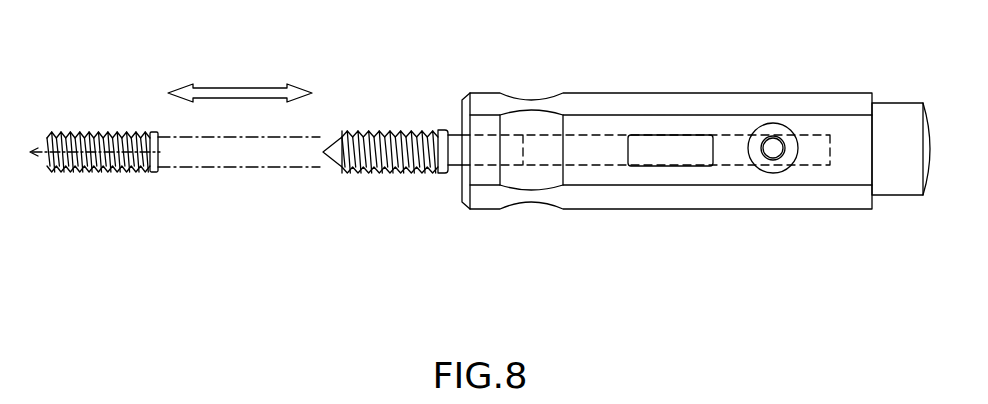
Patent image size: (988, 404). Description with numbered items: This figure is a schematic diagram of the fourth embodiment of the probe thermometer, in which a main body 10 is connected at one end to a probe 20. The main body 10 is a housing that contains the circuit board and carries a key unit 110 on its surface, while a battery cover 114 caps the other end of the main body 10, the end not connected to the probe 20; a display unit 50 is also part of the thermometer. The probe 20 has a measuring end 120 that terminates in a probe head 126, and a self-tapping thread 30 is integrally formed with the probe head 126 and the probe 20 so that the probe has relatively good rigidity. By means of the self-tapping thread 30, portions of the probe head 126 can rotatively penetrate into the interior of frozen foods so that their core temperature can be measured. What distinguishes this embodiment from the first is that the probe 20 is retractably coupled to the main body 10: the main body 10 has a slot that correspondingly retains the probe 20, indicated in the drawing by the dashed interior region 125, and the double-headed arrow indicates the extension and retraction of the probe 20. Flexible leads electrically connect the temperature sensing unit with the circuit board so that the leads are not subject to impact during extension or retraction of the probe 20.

The main body 10 is at (696, 137).
The probe 20 is at (447, 134).
The self-tapping thread 30 is at (377, 130).
The display unit 50 is at (665, 148).
The key unit 110 is at (773, 148).
The battery cover 114 is at (897, 120).
The measuring end 120 is at (365, 173).
The bore 125 is at (735, 163).
The probe head 126 is at (332, 155).